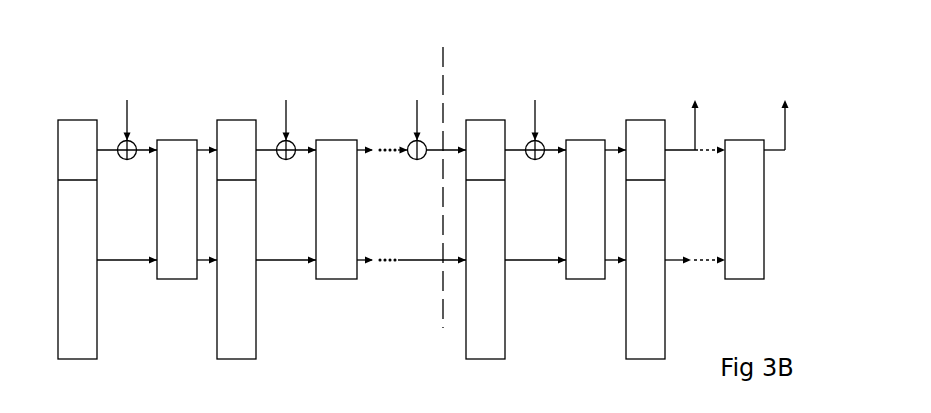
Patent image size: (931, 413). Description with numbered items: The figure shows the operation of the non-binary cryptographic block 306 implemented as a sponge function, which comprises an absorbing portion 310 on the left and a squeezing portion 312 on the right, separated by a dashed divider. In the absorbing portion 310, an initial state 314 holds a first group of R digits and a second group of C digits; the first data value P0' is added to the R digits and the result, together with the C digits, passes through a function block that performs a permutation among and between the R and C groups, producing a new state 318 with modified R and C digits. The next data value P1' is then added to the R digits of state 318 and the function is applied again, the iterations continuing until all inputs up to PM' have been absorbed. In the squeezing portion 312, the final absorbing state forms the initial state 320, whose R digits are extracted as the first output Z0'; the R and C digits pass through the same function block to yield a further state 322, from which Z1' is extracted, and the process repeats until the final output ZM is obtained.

The base-r cryptographic block 306 is at (736, 44).
The absorbing portion 310 is at (364, 43).
The squeezing portion 312 is at (520, 49).
The initial state 314 is at (78, 106).
The new state 318 is at (238, 106).
The initial state of squeezing phase 320 is at (487, 106).
The state register during squeezing 322 is at (645, 106).